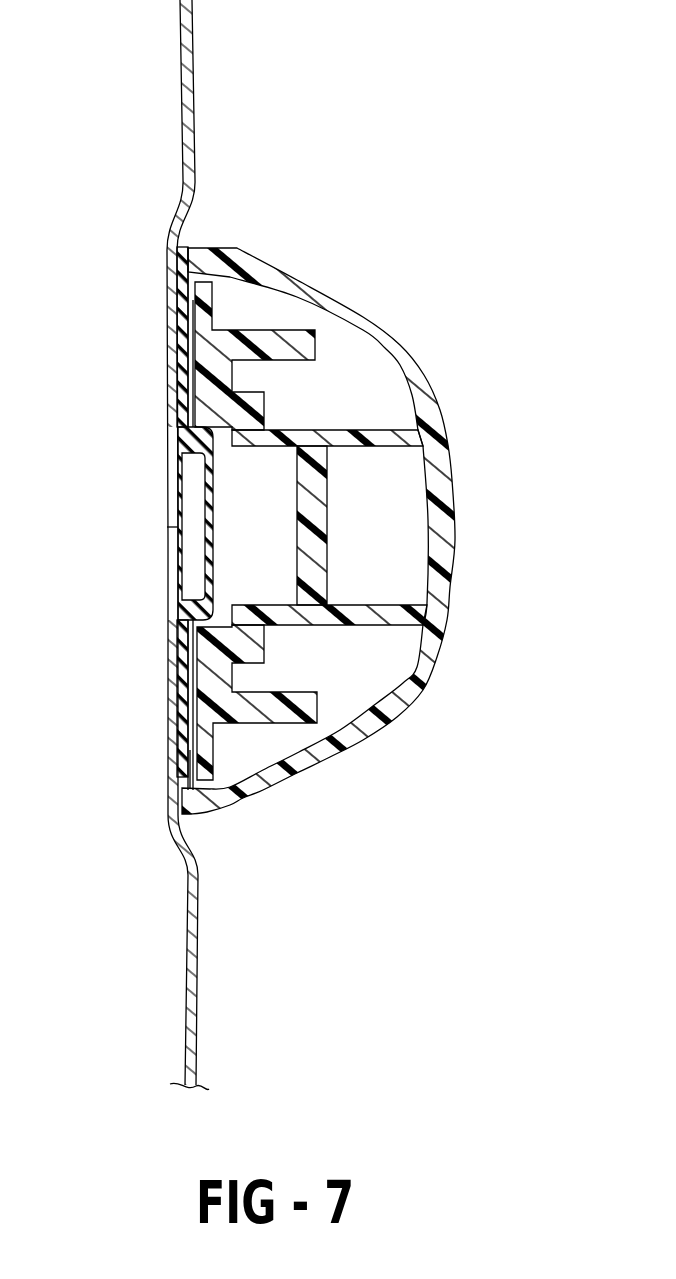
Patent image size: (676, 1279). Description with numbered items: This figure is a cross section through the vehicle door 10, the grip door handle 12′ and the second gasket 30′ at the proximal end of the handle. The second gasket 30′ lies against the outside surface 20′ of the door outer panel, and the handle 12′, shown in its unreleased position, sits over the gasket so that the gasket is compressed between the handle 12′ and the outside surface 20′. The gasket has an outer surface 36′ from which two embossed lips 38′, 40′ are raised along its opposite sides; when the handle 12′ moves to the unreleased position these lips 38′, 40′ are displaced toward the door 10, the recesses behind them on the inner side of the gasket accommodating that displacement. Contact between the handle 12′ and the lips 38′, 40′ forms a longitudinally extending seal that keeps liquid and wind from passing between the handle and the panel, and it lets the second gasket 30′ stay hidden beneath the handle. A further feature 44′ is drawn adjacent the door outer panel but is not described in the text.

The vehicle door 10 is at (188, 1018).
The outside surface of the door outer panel 20′ is at (192, 61).
The grip door handle 12′ is at (445, 502).
The outer surface 36′ is at (198, 410).
The lip 38′ is at (178, 293).
The retaining clip 44′ is at (180, 318).
The second gasket 30′ is at (182, 673).
The lip 40′ is at (183, 760).